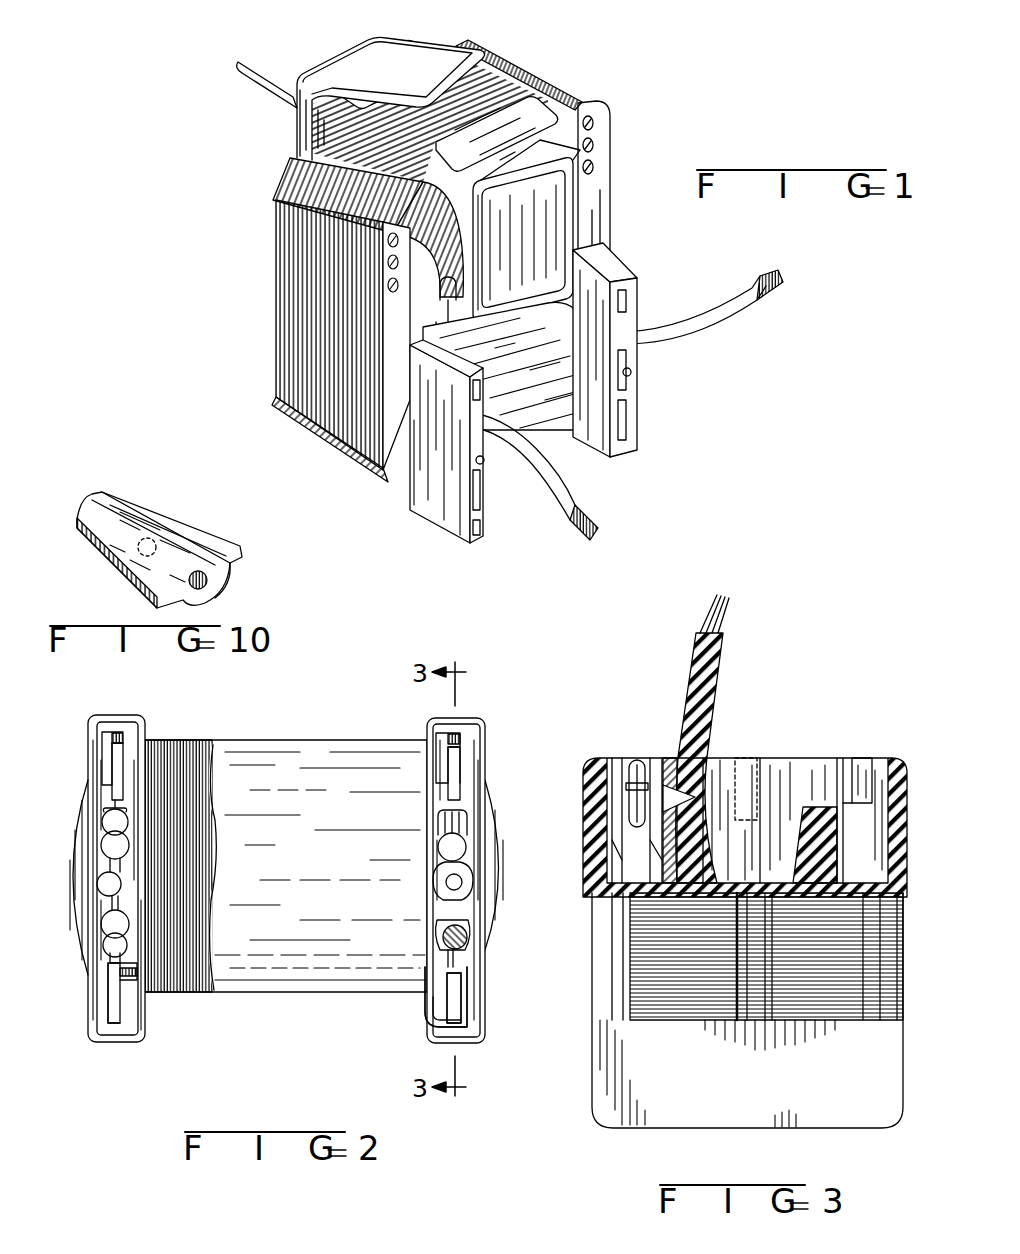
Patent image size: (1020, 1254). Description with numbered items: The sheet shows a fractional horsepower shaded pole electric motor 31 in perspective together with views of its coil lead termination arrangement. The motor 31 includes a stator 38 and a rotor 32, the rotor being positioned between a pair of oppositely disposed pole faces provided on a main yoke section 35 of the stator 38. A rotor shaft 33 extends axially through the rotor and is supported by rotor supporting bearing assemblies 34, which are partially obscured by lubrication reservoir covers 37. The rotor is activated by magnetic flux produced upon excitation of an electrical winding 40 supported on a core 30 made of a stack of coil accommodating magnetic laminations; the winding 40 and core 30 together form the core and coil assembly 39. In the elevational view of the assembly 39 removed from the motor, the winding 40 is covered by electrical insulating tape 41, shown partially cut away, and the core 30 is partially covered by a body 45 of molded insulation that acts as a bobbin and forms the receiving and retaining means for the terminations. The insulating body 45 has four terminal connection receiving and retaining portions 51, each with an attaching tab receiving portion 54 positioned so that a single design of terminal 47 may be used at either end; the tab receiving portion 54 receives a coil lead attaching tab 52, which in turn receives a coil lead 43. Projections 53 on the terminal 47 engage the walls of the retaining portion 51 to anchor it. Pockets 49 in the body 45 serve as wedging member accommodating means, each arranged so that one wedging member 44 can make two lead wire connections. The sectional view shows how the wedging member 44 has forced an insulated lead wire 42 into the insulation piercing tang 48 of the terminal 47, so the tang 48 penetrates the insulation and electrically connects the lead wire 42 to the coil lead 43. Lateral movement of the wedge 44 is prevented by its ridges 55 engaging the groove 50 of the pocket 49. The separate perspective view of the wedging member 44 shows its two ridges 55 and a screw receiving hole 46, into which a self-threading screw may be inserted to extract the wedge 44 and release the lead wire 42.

In FIG. 2, the core 30 is at (85, 797).
In FIG. 3, the core 30 is at (887, 961).
In FIG. 1, the electric motor 31 is at (238, 255).
In FIG. 1, the rotor 32 is at (450, 253).
In FIG. 1, the rotor shaft 33 is at (255, 94).
In FIG. 1, the rotor supporting bearing assemblies 34 is at (412, 56).
In FIG. 1, the main yoke section 35 is at (594, 110).
In FIG. 1, the lubrication reservoir covers 37 is at (331, 70).
In FIG. 1, the stator 38 is at (290, 346).
In FIG. 1, the core and coil assembly 39 is at (428, 476).
In FIG. 2, the core and coil assembly 39 is at (228, 1042).
In FIG. 2, the electrical winding 40 is at (180, 742).
In FIG. 1, the electrical insulating tape 41 is at (560, 443).
In FIG. 2, the electrical insulating tape 41 is at (310, 740).
In FIG. 1, the insulated lead wire 42 is at (703, 310).
In FIG. 2, the insulated lead wire 42 is at (460, 928).
In FIG. 3, the insulated lead wire 42 is at (720, 647).
In FIG. 1, the coil lead 43 is at (582, 330).
In FIG. 2, the coil lead 43 is at (423, 1013).
In FIG. 3, the coil lead 43 is at (610, 785).
In FIG. 10, the wedging member 44 is at (178, 500).
In FIG. 2, the wedging member 44 is at (455, 840).
In FIG. 3, the wedging member 44 is at (793, 767).
In FIG. 2, the molded insulation body 45 is at (88, 975).
In FIG. 3, the molded insulation body 45 is at (900, 813).
In FIG. 1, the screw receiving hole 46 is at (633, 372).
In FIG. 10, the screw receiving hole 46 is at (208, 586).
In FIG. 2, the screw receiving hole 46 is at (462, 880).
In FIG. 3, the screw receiving hole 46 is at (751, 748).
In FIG. 2, the terminal 47 is at (433, 1000).
In FIG. 3, the terminal 47 is at (612, 828).
In FIG. 2, the insulation piercing tang 48 is at (455, 947).
In FIG. 3, the insulation piercing tang 48 is at (672, 780).
In FIG. 2, the pockets 49 is at (113, 882).
In FIG. 2, the wedging member accommodating means groove 50 is at (103, 857).
In FIG. 2, the terminal connection receiving and retaining portions 51 is at (118, 780).
In FIG. 2, the coil lead attaching tab 52 is at (466, 990).
In FIG. 3, the coil lead attaching tab 52 is at (636, 763).
In FIG. 3, the projections 53 is at (620, 888).
In FIG. 2, the attaching tab receiving portion 54 is at (110, 777).
In FIG. 10, the wedging member ridges 55 is at (118, 512).